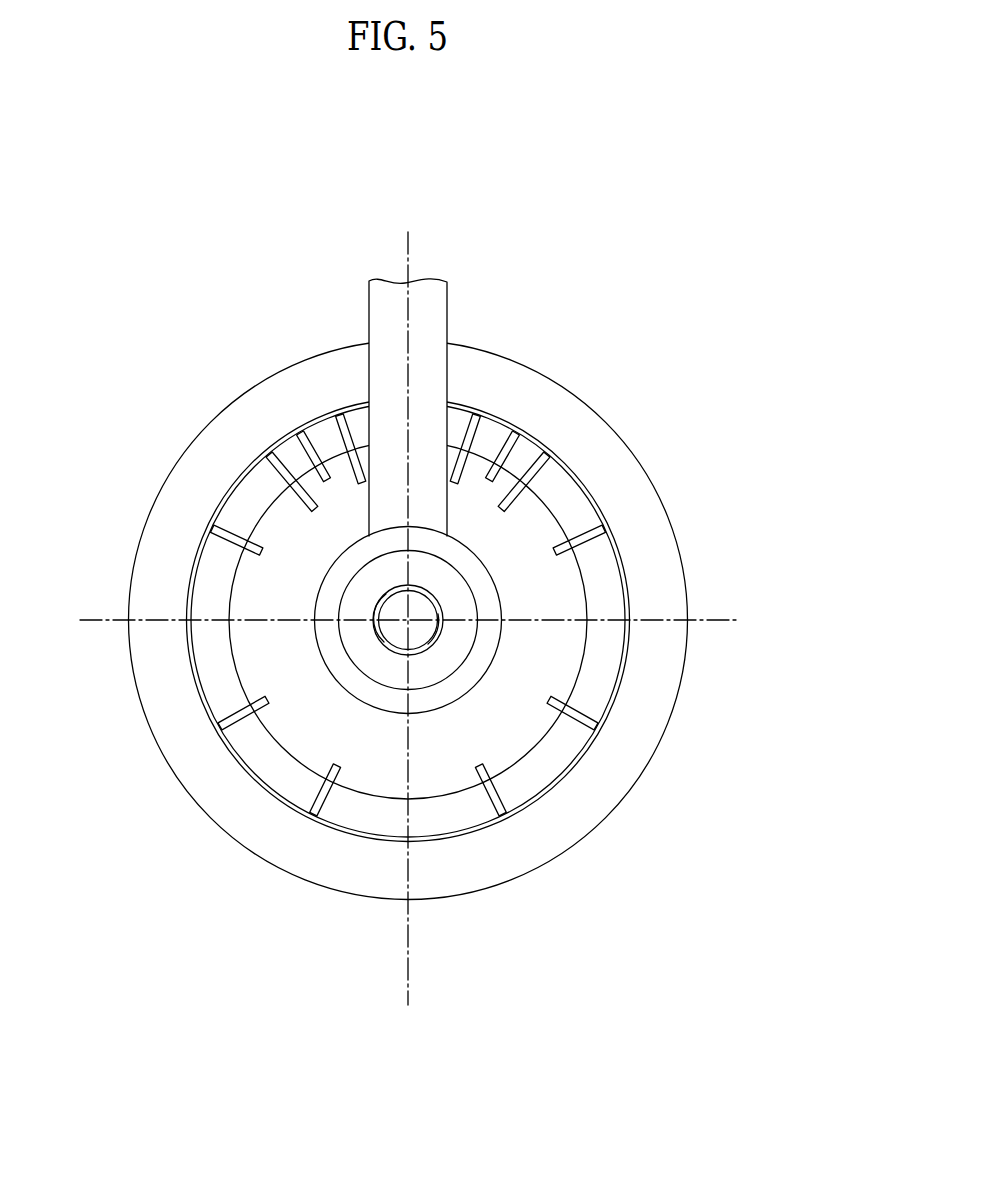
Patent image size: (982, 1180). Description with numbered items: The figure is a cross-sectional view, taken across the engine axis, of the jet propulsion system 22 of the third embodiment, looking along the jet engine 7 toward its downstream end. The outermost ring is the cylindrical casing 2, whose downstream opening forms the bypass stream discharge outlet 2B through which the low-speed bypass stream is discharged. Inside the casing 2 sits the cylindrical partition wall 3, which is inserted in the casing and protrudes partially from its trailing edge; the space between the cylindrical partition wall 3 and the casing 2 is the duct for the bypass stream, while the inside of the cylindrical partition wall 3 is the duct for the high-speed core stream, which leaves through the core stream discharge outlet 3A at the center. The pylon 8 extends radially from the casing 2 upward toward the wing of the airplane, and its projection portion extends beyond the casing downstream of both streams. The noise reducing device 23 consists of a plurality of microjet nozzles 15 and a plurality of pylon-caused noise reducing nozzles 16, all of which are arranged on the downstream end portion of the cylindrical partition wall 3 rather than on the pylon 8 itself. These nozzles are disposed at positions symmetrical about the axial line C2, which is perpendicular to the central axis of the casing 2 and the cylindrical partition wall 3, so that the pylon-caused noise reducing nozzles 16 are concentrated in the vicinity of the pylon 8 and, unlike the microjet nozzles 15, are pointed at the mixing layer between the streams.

The casing 2 is at (185, 737).
The bypass stream discharge outlet 2B is at (243, 740).
The cylindrical partition wall 3 is at (292, 748).
The core stream discharge outlet 3A is at (325, 660).
The jet engine 7 is at (712, 535).
The pylon 8 is at (436, 383).
The microjet nozzles 15 is at (232, 538).
The pylon-caused noise reducing nozzles 16 is at (280, 477).
The jet propulsion system 22 is at (242, 272).
The noise reducing device 23 is at (596, 334).
The axial line C2 is at (402, 264).